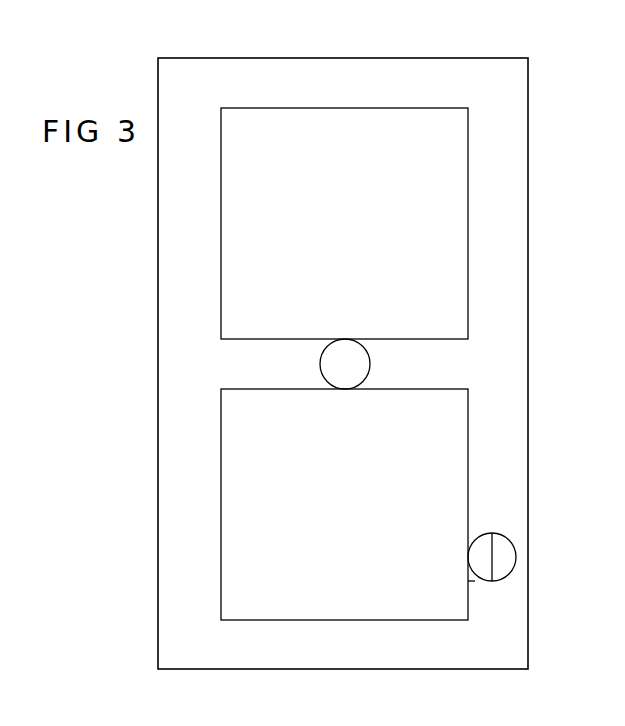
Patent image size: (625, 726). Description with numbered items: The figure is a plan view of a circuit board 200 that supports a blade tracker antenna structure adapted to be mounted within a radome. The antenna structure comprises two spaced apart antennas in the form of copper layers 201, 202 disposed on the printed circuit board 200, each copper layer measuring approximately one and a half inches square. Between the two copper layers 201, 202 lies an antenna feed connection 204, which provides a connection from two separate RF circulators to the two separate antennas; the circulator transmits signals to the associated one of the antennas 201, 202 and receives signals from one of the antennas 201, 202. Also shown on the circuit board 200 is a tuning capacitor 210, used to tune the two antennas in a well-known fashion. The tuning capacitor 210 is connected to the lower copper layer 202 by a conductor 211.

The circuit board 200 is at (276, 46).
The copper layer 201 is at (337, 108).
The copper layer 202 is at (237, 395).
The antenna feed connection 204 is at (341, 343).
The tuning capacitor 210 is at (479, 535).
The conductor 211 is at (473, 584).